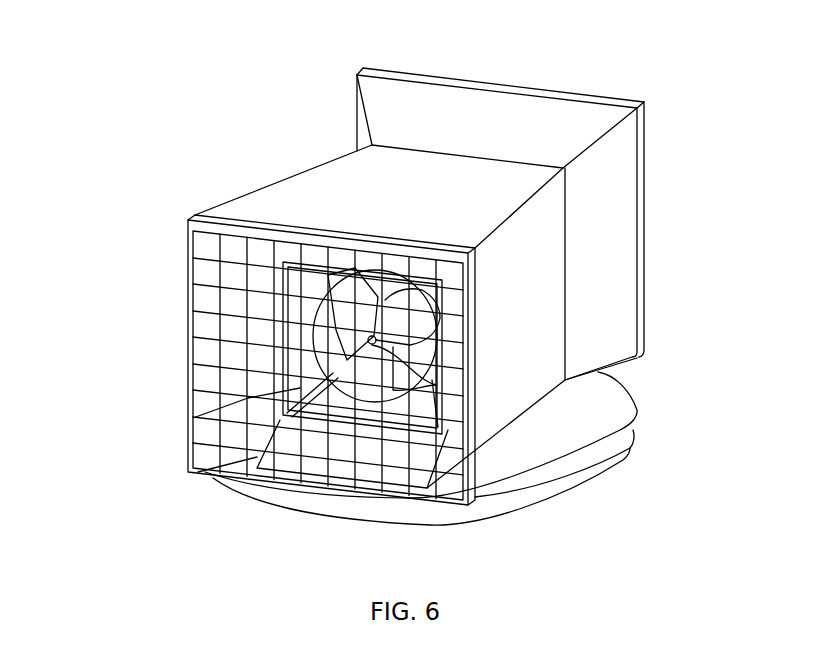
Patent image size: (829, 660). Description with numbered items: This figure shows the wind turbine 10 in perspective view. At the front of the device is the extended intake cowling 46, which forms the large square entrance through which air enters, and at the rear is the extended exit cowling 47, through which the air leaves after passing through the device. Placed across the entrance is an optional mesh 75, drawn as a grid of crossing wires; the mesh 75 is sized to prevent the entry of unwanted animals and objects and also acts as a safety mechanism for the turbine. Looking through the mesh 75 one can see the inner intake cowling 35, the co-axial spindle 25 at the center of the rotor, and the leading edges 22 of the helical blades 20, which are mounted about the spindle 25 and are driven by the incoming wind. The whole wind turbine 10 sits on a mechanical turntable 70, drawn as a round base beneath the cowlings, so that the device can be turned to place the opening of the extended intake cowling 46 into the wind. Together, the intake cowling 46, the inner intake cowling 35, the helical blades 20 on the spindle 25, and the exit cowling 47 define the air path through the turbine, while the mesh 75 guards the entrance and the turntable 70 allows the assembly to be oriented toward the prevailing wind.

The wind turbine 10 is at (225, 183).
The helical blades 20 is at (407, 350).
The leading edges 22 is at (345, 345).
The co-axial spindle 25 is at (400, 318).
The intake cowling 35 is at (190, 420).
The extended intake cowling 46 is at (472, 382).
The extended exit cowling 47 is at (372, 92).
The mechanical turntable 70 is at (290, 503).
The mesh 75 is at (210, 370).